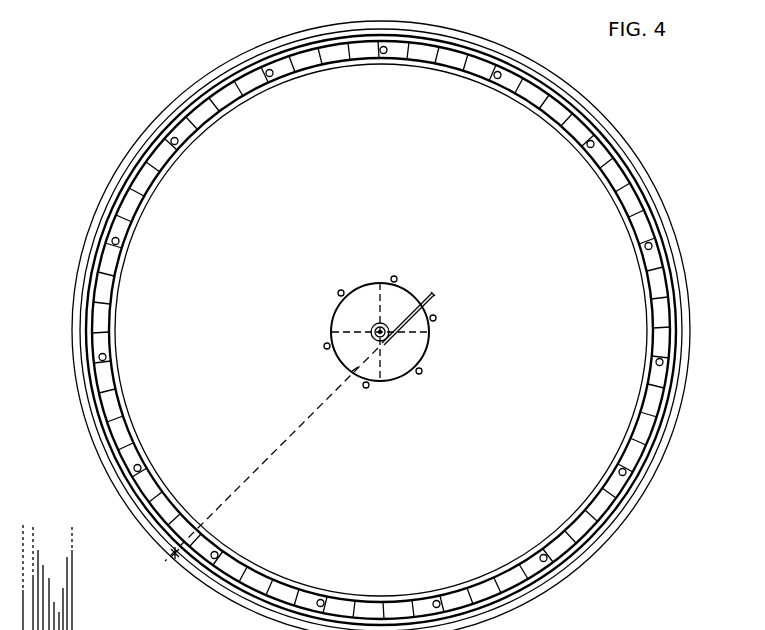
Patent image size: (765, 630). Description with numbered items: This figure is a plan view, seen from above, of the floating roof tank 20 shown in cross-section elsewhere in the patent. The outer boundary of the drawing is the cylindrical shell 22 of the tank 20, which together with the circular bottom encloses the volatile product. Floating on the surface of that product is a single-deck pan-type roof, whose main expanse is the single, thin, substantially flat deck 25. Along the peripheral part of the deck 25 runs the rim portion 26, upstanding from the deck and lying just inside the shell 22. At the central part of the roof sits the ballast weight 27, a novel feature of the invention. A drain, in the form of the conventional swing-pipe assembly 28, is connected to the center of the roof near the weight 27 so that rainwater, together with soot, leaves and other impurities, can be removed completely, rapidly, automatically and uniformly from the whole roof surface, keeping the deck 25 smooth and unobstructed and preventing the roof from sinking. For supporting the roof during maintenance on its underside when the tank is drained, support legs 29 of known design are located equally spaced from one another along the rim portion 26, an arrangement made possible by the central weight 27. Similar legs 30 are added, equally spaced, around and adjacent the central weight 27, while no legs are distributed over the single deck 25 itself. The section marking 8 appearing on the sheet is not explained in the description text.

The floating roof tank 20 is at (148, 107).
The cylindrical shell 22 is at (126, 164).
The single deck 25 is at (518, 233).
The rim portion 26 is at (647, 260).
The ballast weight 27 is at (343, 273).
The swing-pipe assembly 28 is at (285, 442).
The support legs 29 is at (105, 361).
The legs 30 is at (434, 322).
The section 8- 8 is at (57, 372).